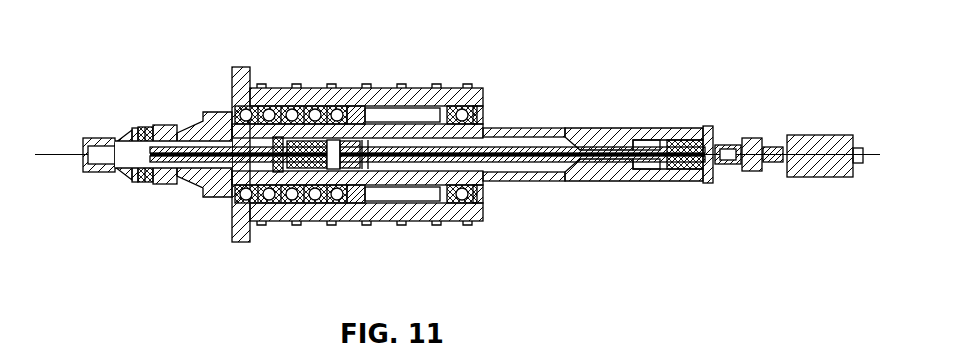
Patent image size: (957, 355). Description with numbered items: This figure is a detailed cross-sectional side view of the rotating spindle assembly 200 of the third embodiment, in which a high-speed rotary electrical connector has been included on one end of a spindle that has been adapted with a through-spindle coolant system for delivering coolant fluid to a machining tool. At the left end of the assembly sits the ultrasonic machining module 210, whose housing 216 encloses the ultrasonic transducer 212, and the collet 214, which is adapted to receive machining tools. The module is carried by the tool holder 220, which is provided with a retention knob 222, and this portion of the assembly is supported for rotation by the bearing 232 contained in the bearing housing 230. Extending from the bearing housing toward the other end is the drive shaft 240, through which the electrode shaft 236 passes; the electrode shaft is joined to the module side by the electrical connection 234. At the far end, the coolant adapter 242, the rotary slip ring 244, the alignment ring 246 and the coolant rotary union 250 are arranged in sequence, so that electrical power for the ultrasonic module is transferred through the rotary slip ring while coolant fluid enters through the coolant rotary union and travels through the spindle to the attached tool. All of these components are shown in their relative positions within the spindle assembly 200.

The rotating spindle assembly 200 is at (594, 80).
The ultrasonic machining module 210 is at (170, 115).
The ultrasonic transducer 212 is at (148, 178).
The collet 214 is at (95, 168).
The housing 216 is at (143, 124).
The tool holder 220 is at (196, 186).
The retention knob 222 is at (221, 112).
The bearing housing 230 is at (346, 87).
The bearing 232 is at (273, 116).
The electrical connection 234 is at (323, 158).
The electrode shaft 236 is at (500, 150).
The drive shaft 240 is at (593, 181).
The coolant adapter 242 is at (733, 167).
The rotary slip ring 244 is at (752, 141).
The alignment ring 246 is at (772, 146).
The coolant rotary union 250 is at (823, 176).